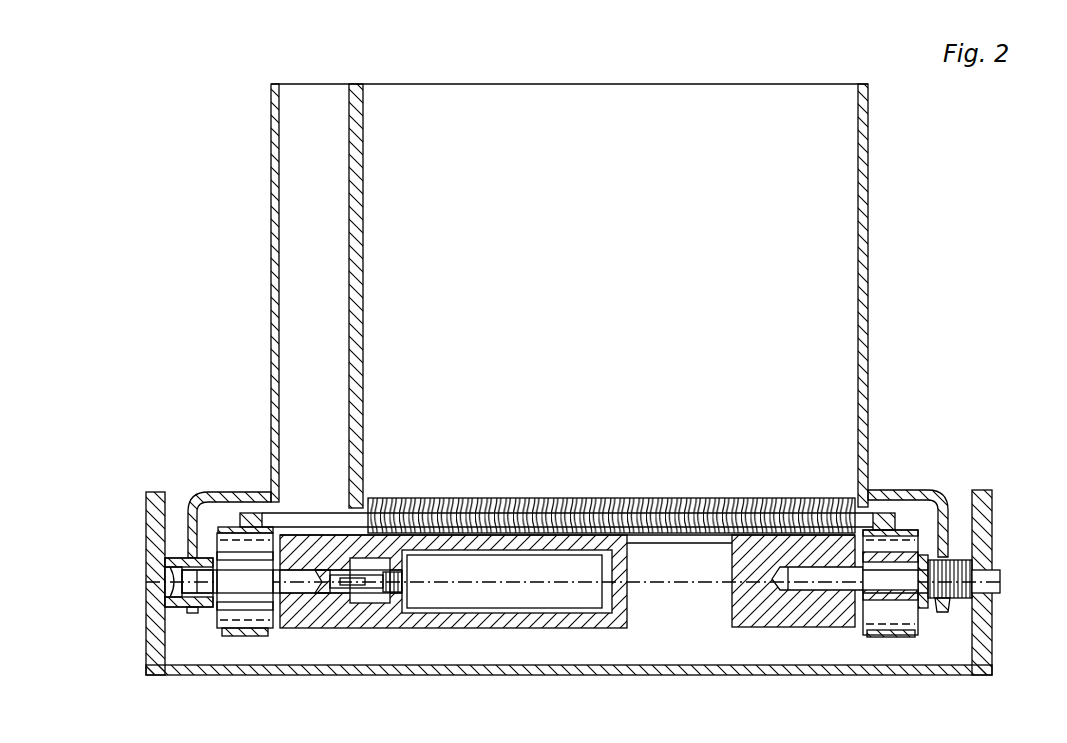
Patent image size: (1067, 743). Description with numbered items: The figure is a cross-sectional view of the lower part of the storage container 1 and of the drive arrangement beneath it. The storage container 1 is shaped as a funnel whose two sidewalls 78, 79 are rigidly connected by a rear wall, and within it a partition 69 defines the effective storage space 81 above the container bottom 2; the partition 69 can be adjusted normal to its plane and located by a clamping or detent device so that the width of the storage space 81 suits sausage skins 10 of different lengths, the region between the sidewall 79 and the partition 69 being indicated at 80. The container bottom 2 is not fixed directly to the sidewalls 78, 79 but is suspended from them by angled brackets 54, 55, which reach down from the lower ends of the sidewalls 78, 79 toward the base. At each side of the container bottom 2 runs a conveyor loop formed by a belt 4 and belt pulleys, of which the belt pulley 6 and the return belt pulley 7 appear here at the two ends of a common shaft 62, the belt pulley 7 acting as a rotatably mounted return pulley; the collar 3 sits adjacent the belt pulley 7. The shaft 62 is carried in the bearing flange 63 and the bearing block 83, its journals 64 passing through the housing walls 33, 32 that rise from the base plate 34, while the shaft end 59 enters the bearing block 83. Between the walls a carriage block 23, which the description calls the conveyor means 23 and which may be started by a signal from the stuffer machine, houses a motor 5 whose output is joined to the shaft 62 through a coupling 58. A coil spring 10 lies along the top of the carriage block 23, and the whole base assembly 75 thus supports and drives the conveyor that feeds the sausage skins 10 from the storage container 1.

The storage container 1 is at (558, 63).
The storage space 81 is at (570, 266).
The sidewall 79 is at (275, 222).
The partition 69 is at (357, 254).
The sidewall 78 is at (882, 260).
The chamber 80 is at (386, 286).
The angled bracket 54 is at (232, 497).
The angled bracket 55 is at (945, 497).
The housing wall 33 is at (155, 522).
The right base wall 32 is at (985, 517).
The base plate 34 is at (618, 670).
The conveyor means 23 is at (340, 651).
The container bottom 2 is at (692, 543).
The bearing block 83 is at (790, 622).
The shaft end 59 is at (862, 602).
The coupling 58 is at (200, 598).
The motor 5 is at (505, 596).
The bearing flange 63 is at (160, 577).
The spindle shaft 62 is at (992, 592).
The shaft journal 64 is at (168, 597).
The belt pulley 6 is at (245, 640).
The belt pulley 7 is at (912, 612).
The collar 3 is at (866, 516).
The belt 4 is at (255, 640).
The sausage skin 10 is at (555, 500).
The base assembly 75 is at (149, 697).